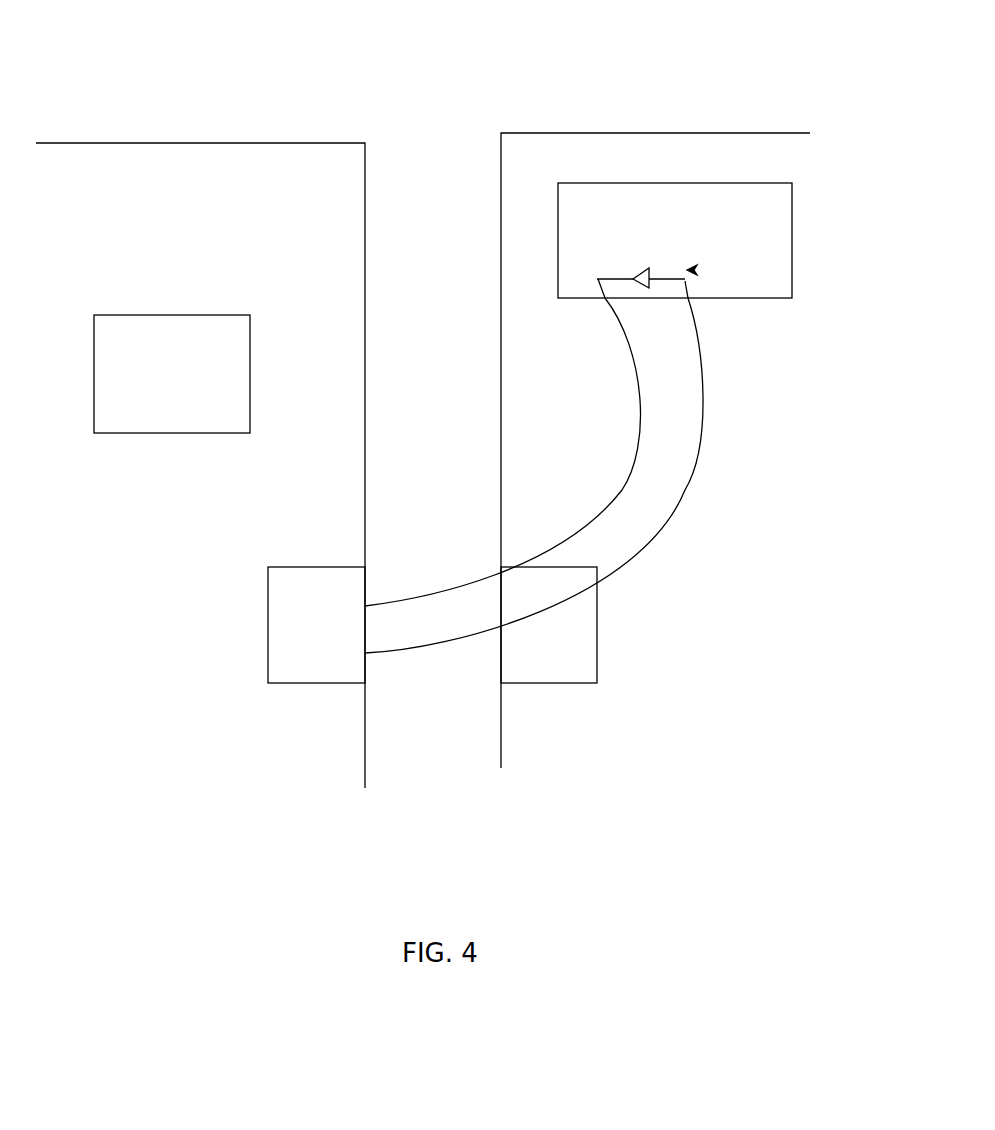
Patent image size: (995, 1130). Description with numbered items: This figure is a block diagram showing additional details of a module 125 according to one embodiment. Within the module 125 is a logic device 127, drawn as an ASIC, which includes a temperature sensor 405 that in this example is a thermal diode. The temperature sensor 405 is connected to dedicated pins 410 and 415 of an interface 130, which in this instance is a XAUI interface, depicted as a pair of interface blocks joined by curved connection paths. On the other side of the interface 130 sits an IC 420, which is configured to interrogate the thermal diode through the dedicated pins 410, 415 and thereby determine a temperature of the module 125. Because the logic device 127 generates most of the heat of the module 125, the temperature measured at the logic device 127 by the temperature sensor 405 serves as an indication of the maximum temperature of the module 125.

The module 125 is at (588, 163).
The logic device 127 is at (777, 270).
The temperature sensor 405 is at (692, 271).
The dedicated pin 410 is at (365, 605).
The dedicated pin 415 is at (365, 653).
The IC 420 is at (170, 413).
The interface 130 is at (578, 663).